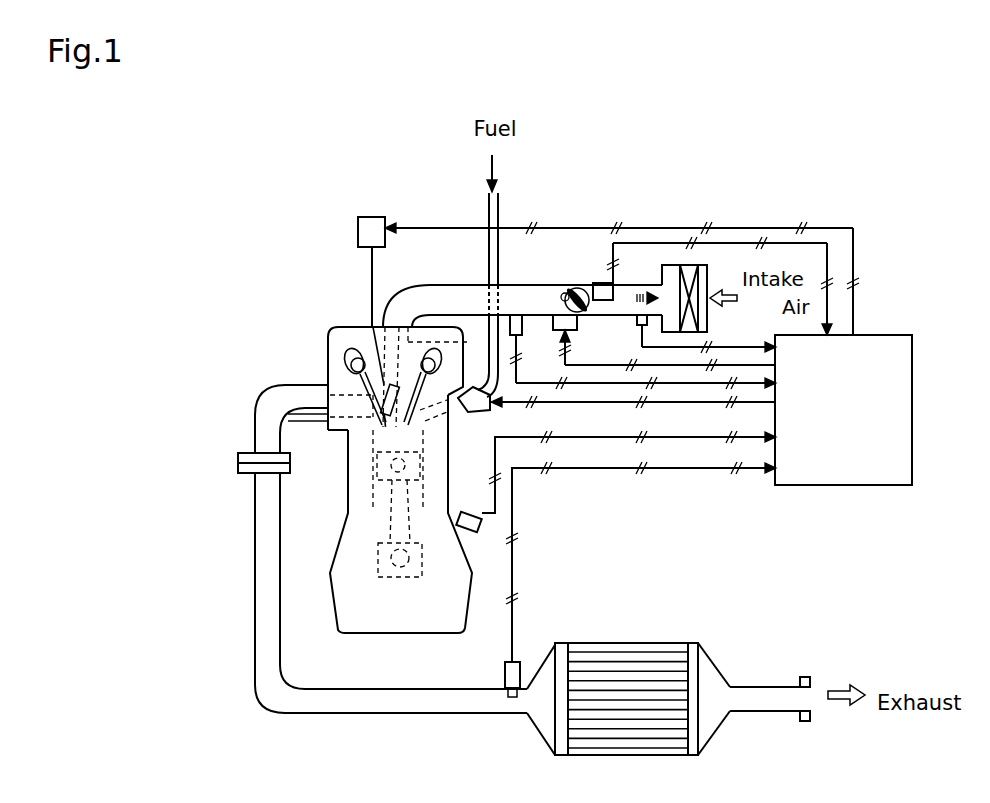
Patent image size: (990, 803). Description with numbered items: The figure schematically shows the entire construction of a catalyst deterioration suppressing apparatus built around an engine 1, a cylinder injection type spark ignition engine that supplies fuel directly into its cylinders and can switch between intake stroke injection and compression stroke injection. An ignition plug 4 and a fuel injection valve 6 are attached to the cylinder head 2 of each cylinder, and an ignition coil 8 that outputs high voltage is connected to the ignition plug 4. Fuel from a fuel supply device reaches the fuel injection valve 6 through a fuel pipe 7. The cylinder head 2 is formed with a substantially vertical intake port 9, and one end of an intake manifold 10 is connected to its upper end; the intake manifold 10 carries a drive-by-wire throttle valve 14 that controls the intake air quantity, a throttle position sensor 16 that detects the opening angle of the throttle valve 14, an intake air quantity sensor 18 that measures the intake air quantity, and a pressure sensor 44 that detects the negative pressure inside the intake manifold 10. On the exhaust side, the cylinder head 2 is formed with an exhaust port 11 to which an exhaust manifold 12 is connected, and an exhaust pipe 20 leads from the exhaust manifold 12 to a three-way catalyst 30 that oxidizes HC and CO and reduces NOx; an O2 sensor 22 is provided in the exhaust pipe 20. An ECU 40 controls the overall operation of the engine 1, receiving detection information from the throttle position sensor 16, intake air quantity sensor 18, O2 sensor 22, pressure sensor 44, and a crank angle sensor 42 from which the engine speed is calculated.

The engine 1 is at (380, 452).
The cylinder head 2 is at (357, 327).
The ignition plug 4 is at (384, 390).
The fuel injection valve 6 is at (480, 413).
The fuel pipe 7 is at (499, 206).
The ignition coil 8 is at (375, 217).
The intake port 9 is at (458, 341).
The intake manifold 10 is at (456, 286).
The exhaust port 11 is at (340, 432).
The exhaust manifold 12 is at (262, 392).
The throttle valve 14 is at (566, 294).
The throttle position sensor 16 is at (598, 284).
The intake air quantity sensor 18 is at (636, 321).
The exhaust pipe 20 is at (414, 714).
The O2 sensor 22 is at (504, 675).
The three-way catalyst 30 is at (630, 641).
The ECU 40 is at (845, 487).
The crank angle sensor 42 is at (463, 511).
The pressure sensor 44 is at (522, 322).